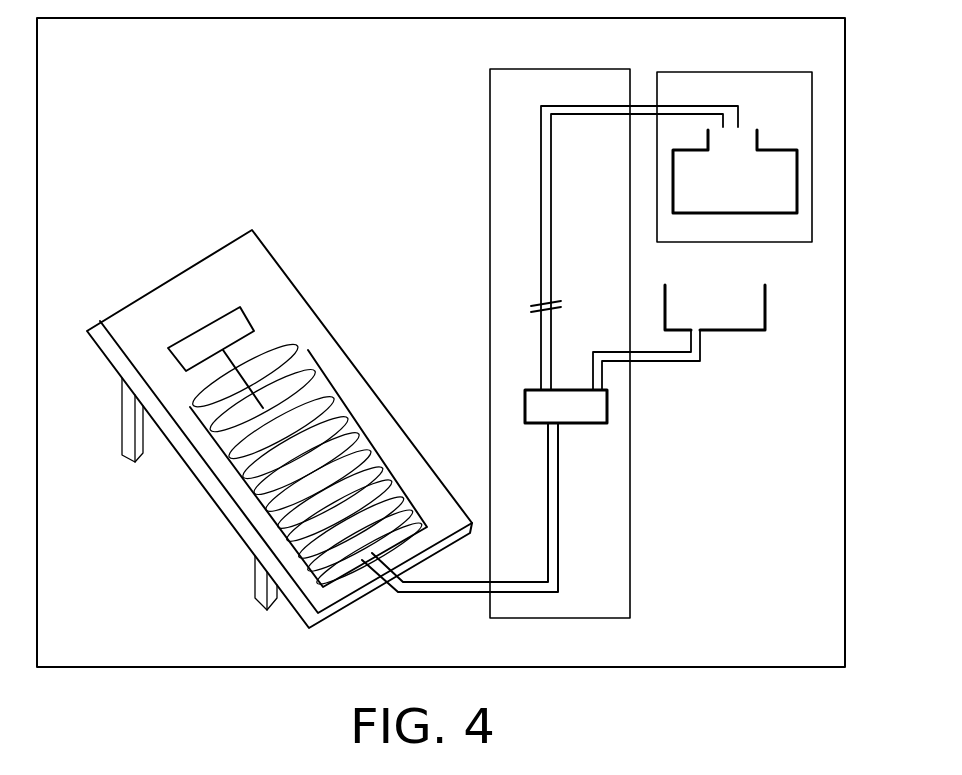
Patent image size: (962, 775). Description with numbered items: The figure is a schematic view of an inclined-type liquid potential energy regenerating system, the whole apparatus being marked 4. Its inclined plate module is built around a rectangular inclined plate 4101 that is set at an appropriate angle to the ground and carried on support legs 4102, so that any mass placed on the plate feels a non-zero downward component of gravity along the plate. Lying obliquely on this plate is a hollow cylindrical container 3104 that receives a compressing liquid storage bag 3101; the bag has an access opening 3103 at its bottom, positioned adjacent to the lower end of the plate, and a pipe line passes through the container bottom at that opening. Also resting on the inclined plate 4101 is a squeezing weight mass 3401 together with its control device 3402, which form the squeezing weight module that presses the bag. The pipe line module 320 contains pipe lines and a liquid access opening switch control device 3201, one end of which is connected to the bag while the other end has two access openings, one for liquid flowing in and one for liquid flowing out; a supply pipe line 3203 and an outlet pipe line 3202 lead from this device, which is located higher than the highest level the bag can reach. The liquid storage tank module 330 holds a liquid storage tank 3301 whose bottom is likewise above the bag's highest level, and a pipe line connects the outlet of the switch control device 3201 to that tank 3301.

The liquid supply system 4 is at (441, 342).
The pipe line module 320 is at (560, 343).
The liquid storage tank module 330 is at (734, 157).
The compressing liquid storage bag 3101 is at (373, 443).
The access opening 3103 is at (380, 554).
The coil housing 3104 is at (367, 372).
The liquid access opening switch control device 3201 is at (590, 426).
The outlet pipe 3202 is at (602, 377).
The supply pipe 3203 is at (552, 389).
The liquid storage tank 3301 is at (782, 148).
The squeezing weight mass 3401 is at (316, 365).
The control device 3402 is at (197, 331).
The rectangular inclined plate 4101 is at (208, 485).
The support leg 4102 is at (120, 414).